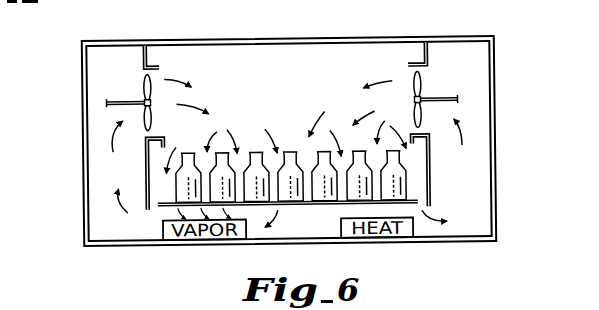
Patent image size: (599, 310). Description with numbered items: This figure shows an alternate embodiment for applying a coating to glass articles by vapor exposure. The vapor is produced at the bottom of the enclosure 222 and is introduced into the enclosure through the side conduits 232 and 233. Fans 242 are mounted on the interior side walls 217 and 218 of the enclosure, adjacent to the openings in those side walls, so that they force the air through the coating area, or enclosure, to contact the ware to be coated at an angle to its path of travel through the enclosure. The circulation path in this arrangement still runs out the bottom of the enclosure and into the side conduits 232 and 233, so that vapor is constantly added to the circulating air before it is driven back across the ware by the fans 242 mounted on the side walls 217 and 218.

The interior side wall 217 is at (150, 44).
The interior side wall 218 is at (432, 52).
The enclosure 222 is at (317, 100).
The side conduit 232 is at (103, 164).
The side conduit 233 is at (475, 176).
The fans 242 is at (117, 98).